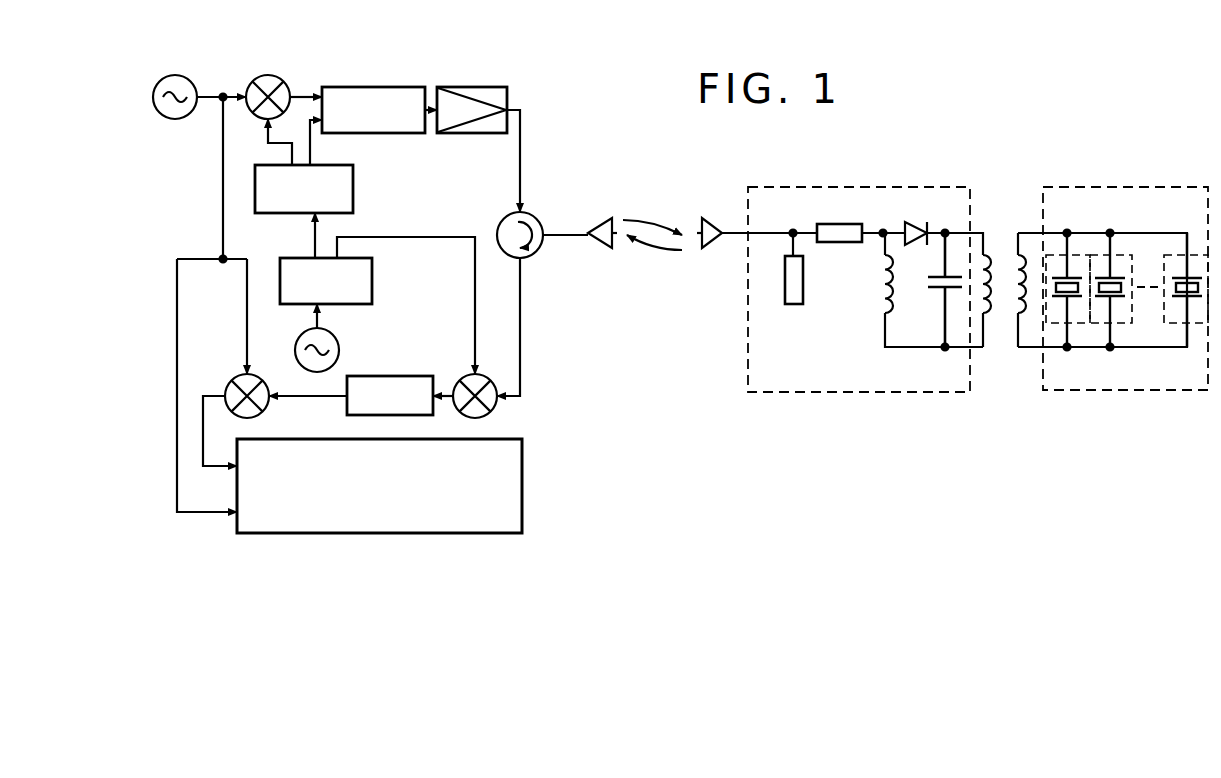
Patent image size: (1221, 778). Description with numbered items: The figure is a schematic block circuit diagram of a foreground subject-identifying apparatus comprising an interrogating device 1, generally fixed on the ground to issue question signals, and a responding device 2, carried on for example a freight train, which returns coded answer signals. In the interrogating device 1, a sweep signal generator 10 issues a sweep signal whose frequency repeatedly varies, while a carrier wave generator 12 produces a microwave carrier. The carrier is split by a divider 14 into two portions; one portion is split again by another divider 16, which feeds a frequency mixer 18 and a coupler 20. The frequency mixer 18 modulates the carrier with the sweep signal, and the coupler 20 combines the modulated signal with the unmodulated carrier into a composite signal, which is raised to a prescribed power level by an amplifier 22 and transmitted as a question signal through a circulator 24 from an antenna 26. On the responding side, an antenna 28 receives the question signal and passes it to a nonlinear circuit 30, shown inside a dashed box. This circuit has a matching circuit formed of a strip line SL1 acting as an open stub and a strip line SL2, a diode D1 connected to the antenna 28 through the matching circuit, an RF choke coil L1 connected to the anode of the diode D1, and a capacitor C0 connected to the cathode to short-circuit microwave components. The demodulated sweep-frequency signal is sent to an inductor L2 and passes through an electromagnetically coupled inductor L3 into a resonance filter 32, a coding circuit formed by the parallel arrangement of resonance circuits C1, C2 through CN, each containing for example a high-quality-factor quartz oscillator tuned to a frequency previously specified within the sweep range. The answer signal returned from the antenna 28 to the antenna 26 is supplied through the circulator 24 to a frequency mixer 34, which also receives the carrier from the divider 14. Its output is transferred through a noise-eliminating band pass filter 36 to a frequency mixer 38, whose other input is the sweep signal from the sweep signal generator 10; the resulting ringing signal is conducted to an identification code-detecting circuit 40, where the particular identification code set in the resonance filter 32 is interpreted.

The interrogating device 1 is at (410, 75).
The responding device 2 is at (957, 164).
The sweep signal generator 10 is at (175, 119).
The carrier wave generator 12 is at (339, 350).
The divider 14 is at (372, 280).
The divider 16 is at (353, 190).
The frequency mixer 18 is at (284, 81).
The coupler 20 is at (358, 87).
The amplifier 22 is at (484, 87).
The circulator 24 is at (534, 216).
The antenna 26 is at (600, 248).
The antenna 28 is at (707, 248).
The nonlinear circuit 30 is at (804, 187).
The resonance filter 32 is at (1088, 186).
The frequency mixer 34 is at (493, 409).
The band pass filter 36 is at (396, 376).
The frequency mixer 38 is at (265, 410).
The identification code-detecting circuit 40 is at (522, 478).
The strip line SL1 is at (793, 304).
The strip line SL2 is at (841, 243).
The diode D1 is at (916, 222).
The RF choke coil L1 is at (873, 302).
The capacitor C0 is at (935, 290).
The inductor L2 is at (988, 322).
The inductor L3 is at (1013, 322).
The resonance circuit C1 is at (1075, 327).
The resonance circuit C2 is at (1118, 327).
The resonance circuit CN is at (1170, 327).